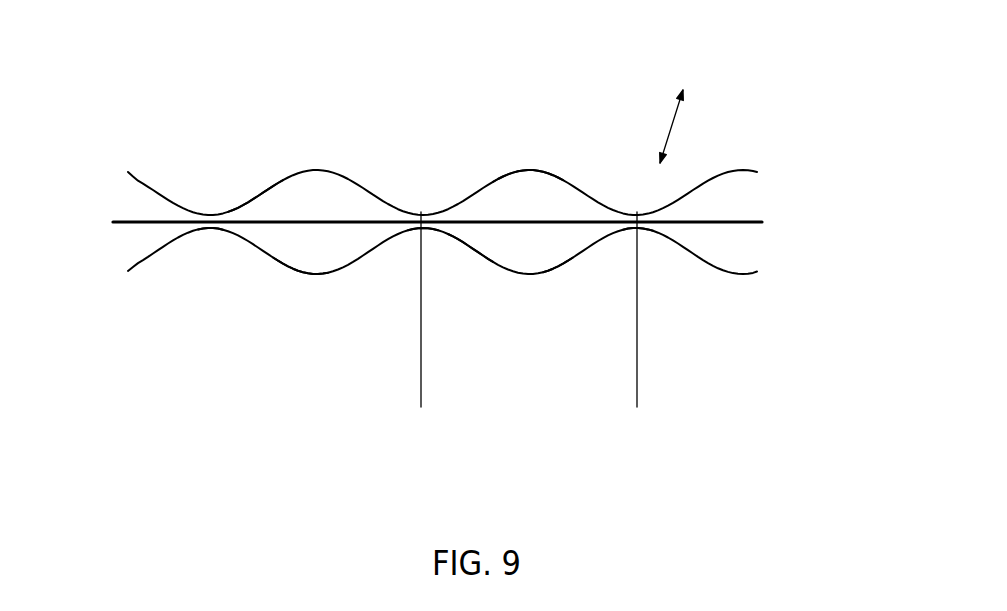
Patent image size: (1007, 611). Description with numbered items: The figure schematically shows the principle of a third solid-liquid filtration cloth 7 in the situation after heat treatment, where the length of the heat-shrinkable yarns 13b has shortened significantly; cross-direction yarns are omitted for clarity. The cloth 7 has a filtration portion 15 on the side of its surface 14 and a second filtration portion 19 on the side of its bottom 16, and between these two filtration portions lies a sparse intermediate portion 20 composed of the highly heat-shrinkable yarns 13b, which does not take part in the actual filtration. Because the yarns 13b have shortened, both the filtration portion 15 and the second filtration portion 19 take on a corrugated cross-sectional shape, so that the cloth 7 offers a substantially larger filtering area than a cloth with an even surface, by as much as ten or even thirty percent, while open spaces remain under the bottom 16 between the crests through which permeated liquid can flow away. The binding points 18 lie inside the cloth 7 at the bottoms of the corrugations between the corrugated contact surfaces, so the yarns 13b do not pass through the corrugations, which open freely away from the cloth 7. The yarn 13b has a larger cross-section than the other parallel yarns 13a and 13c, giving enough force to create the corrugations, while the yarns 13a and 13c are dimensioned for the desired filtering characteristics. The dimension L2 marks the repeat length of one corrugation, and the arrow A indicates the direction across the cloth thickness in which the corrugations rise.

The solid-liquid filtration cloth 7 is at (421, 209).
The parallel yarn 13a is at (148, 190).
The heat-shrinkable yarn 13b is at (130, 219).
The parallel yarn 13c is at (155, 250).
The surface of the cloth 14 is at (257, 88).
The filtration portion 15 is at (487, 167).
The bottom of the cloth 16 is at (292, 325).
The binding points 18 is at (212, 243).
The second filtration portion 19 is at (475, 262).
The sparse intermediate portion 20 is at (560, 232).
The wave period length L2 is at (637, 393).
The amplitude direction A is at (665, 126).